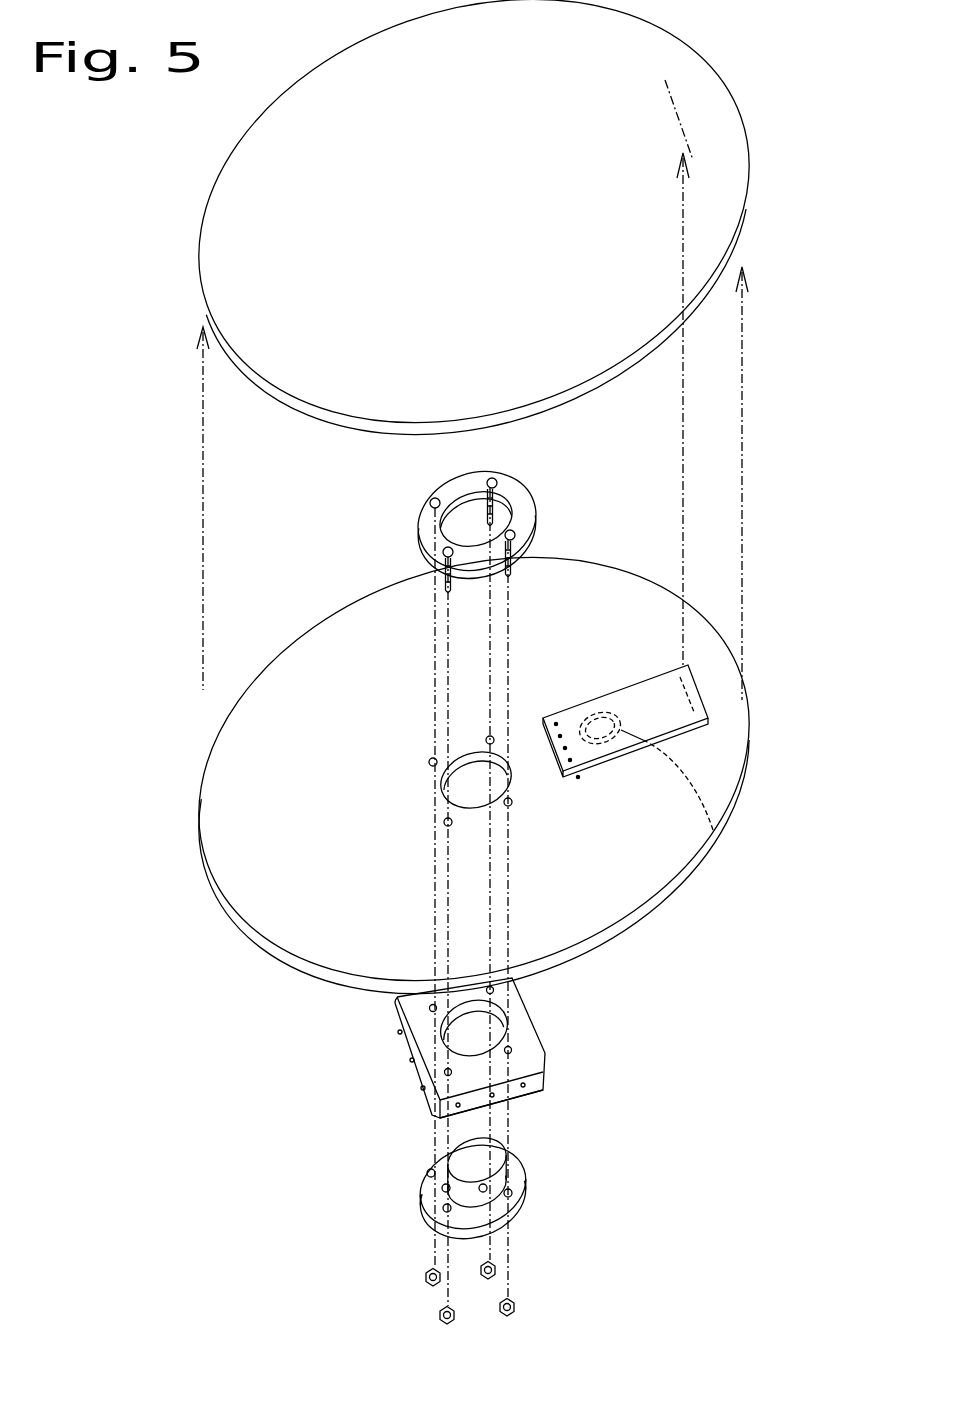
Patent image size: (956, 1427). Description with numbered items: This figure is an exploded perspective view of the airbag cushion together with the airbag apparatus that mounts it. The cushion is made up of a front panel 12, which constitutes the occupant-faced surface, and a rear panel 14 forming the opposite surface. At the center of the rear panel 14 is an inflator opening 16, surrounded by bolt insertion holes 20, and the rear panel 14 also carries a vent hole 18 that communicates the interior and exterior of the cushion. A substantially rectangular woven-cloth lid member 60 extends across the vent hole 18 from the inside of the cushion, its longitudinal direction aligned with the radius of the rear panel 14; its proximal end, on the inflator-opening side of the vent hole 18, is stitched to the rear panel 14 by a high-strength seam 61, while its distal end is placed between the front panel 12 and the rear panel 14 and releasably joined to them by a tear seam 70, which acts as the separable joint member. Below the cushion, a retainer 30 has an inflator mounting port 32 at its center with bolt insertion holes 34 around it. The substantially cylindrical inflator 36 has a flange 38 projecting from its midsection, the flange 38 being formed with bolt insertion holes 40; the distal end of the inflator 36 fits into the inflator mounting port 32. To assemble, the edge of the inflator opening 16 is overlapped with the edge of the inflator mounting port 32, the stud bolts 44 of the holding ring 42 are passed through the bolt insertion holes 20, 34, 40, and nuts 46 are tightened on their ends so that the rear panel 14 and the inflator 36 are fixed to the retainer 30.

The front panel 12 is at (677, 70).
The rear panel 14 is at (290, 922).
The inflator opening 16 is at (447, 773).
The vent hole 18 is at (733, 834).
The bolt insertion holes 20 is at (487, 738).
The retainer 30 is at (543, 1040).
The inflator mounting port 32 is at (472, 1027).
The bolt insertion holes 34 is at (395, 1020).
The inflator 36 is at (490, 1157).
The flange 38 is at (518, 1170).
The bolt insertion holes 40 is at (429, 1173).
The holding ring 42 is at (417, 537).
The stud bolts 44 is at (513, 570).
The nuts 46 is at (440, 1313).
The lid member 60 is at (683, 737).
The seam 61 is at (551, 710).
The tear seam 70 is at (665, 82).